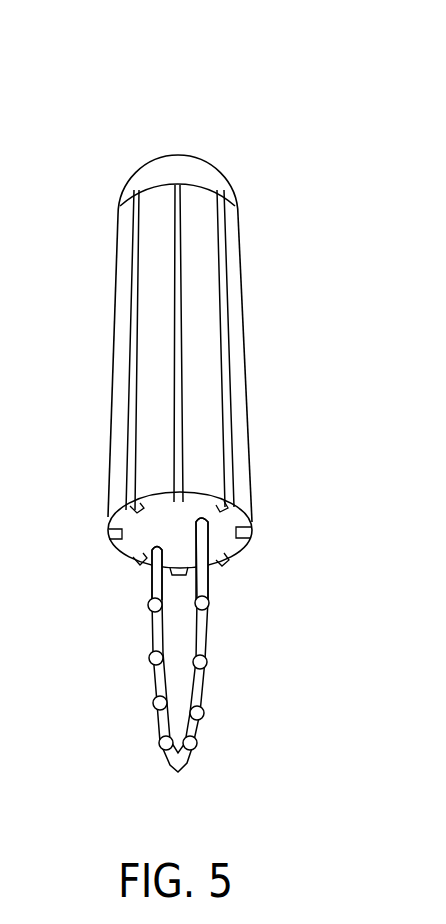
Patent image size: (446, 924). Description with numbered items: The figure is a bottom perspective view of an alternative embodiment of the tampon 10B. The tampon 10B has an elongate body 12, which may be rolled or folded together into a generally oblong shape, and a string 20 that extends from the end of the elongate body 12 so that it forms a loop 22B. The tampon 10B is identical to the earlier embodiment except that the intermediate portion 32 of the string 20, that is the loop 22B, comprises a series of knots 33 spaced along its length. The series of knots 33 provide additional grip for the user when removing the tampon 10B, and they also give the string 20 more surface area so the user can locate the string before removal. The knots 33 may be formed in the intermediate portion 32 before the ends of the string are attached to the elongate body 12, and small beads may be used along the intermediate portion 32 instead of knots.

The tampon 10B is at (230, 105).
The elongate body 12 is at (195, 352).
The string 20 is at (208, 575).
The loop 22B is at (222, 720).
The intermediate portion 32 is at (207, 686).
The series of knots 33 is at (205, 602).